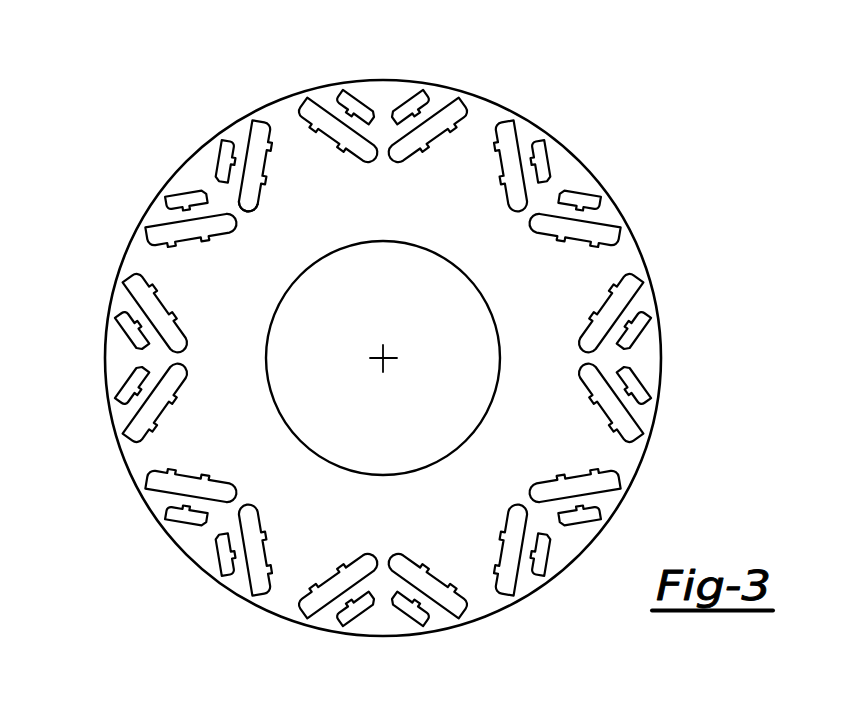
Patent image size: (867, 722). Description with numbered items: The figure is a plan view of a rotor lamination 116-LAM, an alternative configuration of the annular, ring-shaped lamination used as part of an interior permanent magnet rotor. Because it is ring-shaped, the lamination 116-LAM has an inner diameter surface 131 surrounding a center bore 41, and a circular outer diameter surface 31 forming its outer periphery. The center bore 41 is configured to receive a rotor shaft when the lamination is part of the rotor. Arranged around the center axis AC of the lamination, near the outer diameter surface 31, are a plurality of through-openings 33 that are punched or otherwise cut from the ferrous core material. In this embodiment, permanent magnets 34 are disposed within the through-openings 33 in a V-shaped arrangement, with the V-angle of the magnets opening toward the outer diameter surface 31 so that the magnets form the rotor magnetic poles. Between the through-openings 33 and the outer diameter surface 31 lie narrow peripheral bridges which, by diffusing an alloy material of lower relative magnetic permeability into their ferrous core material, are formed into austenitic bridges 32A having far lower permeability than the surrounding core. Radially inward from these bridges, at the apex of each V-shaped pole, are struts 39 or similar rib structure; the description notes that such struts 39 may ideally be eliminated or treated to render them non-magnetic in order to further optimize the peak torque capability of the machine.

The outer diameter surface 31 is at (492, 103).
The austenitic bridge 32A is at (160, 206).
The through-opening 33 is at (247, 207).
The permanent magnet 34 is at (262, 154).
The strut 39 is at (374, 360).
The center bore 41 is at (428, 330).
The inner diameter surface 131 is at (297, 282).
The lamination 116-LAM is at (656, 140).
The center axis AC is at (381, 359).